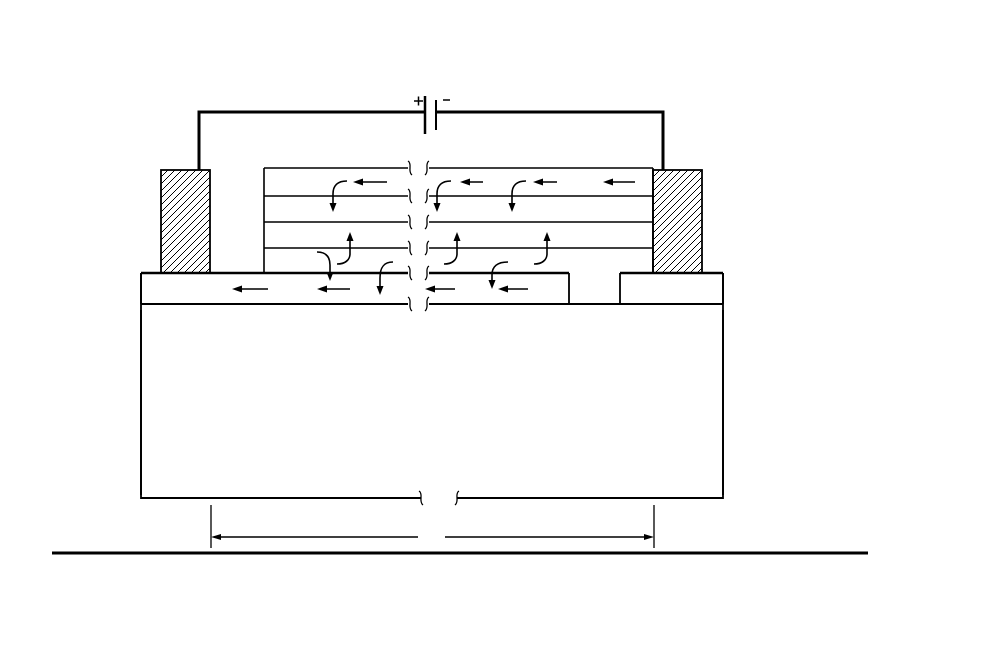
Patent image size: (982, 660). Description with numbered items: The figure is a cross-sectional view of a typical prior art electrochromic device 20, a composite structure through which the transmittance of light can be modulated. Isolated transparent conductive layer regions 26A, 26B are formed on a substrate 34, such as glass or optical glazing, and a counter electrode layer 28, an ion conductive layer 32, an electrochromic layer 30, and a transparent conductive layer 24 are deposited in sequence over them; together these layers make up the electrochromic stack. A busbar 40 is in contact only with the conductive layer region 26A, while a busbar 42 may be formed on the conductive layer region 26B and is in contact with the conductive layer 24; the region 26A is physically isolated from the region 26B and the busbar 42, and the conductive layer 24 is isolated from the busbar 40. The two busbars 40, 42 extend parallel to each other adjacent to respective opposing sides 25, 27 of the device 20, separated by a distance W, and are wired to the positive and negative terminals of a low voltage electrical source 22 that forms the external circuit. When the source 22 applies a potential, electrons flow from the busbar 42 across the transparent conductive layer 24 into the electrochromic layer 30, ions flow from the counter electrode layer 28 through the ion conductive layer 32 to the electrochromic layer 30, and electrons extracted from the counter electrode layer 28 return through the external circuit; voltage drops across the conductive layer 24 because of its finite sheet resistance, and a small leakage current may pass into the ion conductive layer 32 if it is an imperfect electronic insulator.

The electrochromic device 20 is at (768, 120).
The low voltage electrical source 22 is at (323, 88).
The transparent conductive layer 24 is at (605, 172).
The side of the device 25 is at (140, 405).
The transparent conductive layer region 26A is at (150, 293).
The transparent conductive layer region 26B is at (713, 288).
The side of the device 27 is at (724, 395).
The counter electrode layer 28 is at (273, 262).
The electrochromic layer 30 is at (273, 208).
The ion conductive layer 32 is at (273, 235).
The substrate 34 is at (453, 418).
The busbar 40 is at (170, 245).
The busbar 42 is at (693, 222).